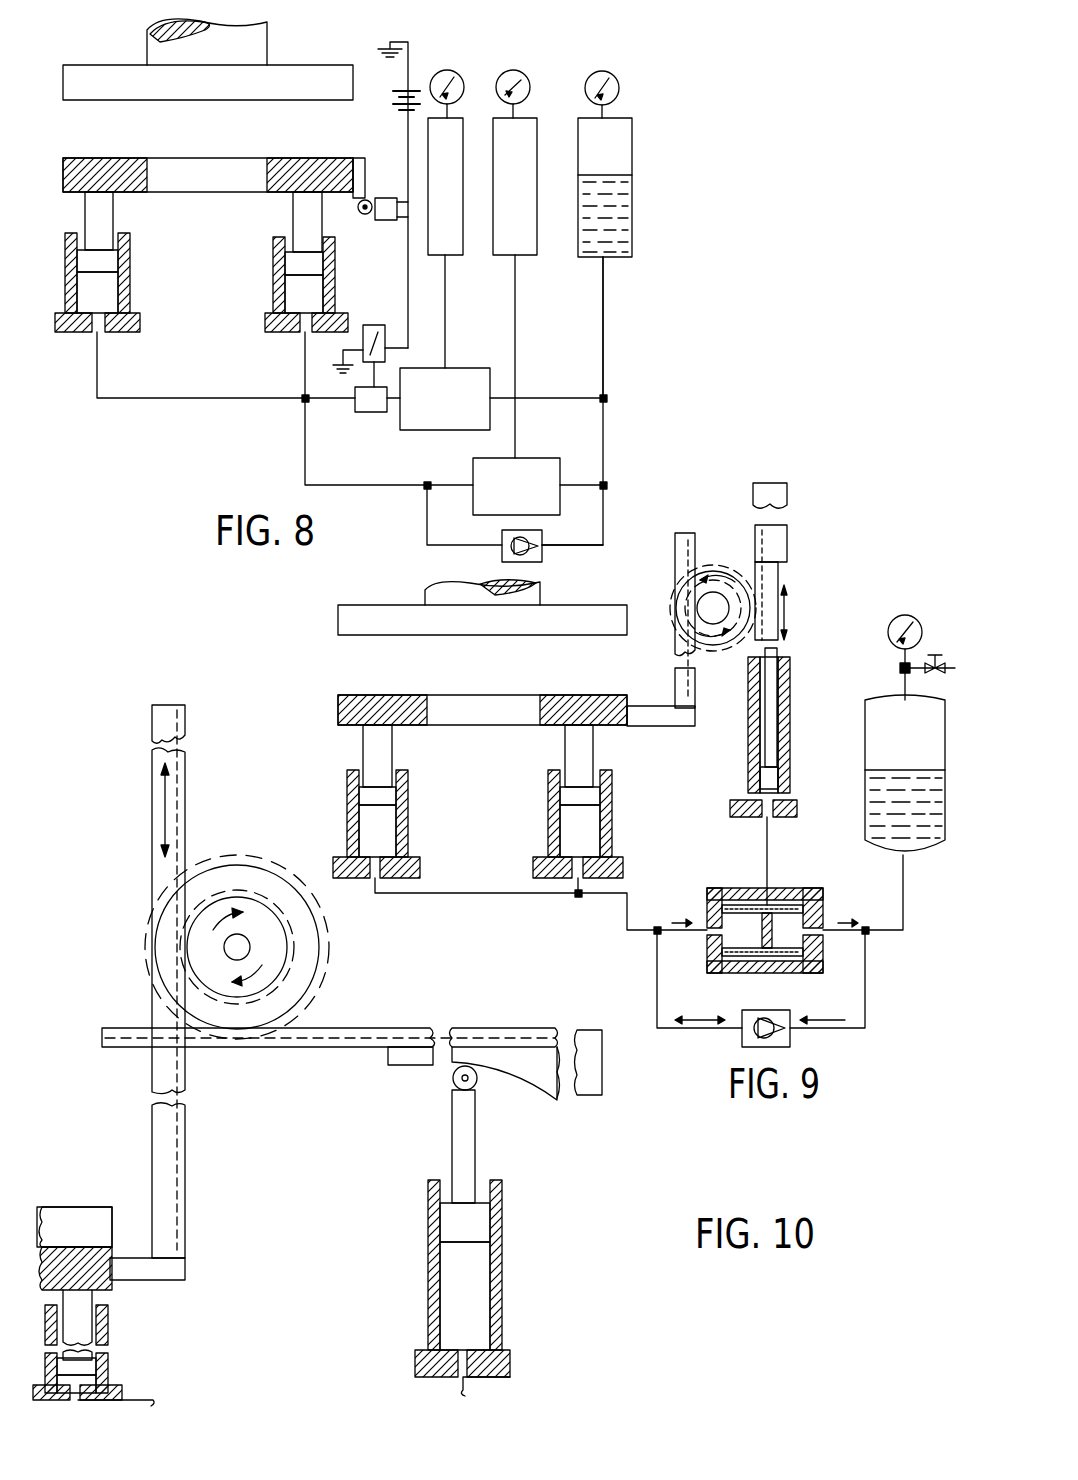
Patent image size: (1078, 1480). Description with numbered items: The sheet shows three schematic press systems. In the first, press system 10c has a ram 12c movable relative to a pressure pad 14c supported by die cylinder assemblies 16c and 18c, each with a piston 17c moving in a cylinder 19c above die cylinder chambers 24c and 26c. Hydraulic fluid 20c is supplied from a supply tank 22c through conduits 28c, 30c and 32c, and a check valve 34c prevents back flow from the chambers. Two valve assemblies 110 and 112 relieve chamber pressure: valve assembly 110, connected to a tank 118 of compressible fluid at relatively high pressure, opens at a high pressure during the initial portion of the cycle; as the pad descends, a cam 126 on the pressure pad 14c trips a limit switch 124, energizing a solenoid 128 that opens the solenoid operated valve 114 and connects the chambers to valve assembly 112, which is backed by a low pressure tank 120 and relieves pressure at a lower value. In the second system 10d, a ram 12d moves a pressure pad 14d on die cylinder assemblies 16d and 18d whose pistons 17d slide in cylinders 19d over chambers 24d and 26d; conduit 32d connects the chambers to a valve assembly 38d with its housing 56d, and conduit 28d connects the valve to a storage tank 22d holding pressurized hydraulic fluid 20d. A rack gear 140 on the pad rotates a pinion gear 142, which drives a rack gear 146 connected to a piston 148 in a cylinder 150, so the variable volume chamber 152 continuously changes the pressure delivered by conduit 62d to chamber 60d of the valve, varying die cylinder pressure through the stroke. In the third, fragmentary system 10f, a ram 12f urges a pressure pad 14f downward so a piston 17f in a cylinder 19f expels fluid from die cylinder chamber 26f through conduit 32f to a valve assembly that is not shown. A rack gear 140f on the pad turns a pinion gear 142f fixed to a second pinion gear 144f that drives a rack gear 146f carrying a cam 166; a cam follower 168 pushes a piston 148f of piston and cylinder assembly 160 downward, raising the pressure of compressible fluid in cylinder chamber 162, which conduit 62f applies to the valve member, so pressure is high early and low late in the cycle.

In FIG. 8, the press system 10c is at (655, 106).
In FIG. 8, the ram 12c is at (149, 40).
In FIG. 8, the pressure pad 14c is at (137, 158).
In FIG. 8, the die cylinder assembly 16c is at (131, 240).
In FIG. 8, the piston 17c is at (110, 258).
In FIG. 8, the die cylinder assembly 18c is at (272, 248).
In FIG. 8, the cylinder 19c is at (125, 285).
In FIG. 8, the die cylinder chamber 24c is at (110, 302).
In FIG. 8, the die cylinder chamber 26c is at (305, 300).
In FIG. 8, the cam 126 is at (354, 162).
In FIG. 8, the limit switch 124 is at (385, 220).
In FIG. 8, the solenoid 128 is at (372, 325).
In FIG. 8, the solenoid operated valve 114 is at (372, 412).
In FIG. 8, the second valve assembly 112 is at (454, 410).
In FIG. 8, the valve assembly 110 is at (529, 500).
In FIG. 8, the tank 120 is at (455, 258).
In FIG. 8, the tank 118 is at (525, 258).
In FIG. 8, the supply tank 22c is at (632, 152).
In FIG. 8, the hydraulic fluid 20c is at (620, 239).
In FIG. 8, the conduit 28c is at (605, 325).
In FIG. 8, the conduit 30c is at (587, 540).
In FIG. 8, the conduit 32c is at (305, 430).
In FIG. 8, the check valve 34c is at (502, 538).
In FIG. 9, the press system 10d is at (838, 541).
In FIG. 9, the ram 12d is at (482, 592).
In FIG. 9, the pressure pad 14d is at (556, 694).
In FIG. 9, the die cylinder assembly 16d is at (413, 778).
In FIG. 9, the piston 17d is at (390, 797).
In FIG. 9, the die cylinder assembly 18d is at (541, 782).
In FIG. 9, the cylinder 19d is at (405, 820).
In FIG. 9, the die cylinder chamber 24d is at (383, 840).
In FIG. 9, the die cylinder chamber 26d is at (567, 828).
In FIG. 9, the conduit 32d is at (640, 907).
In FIG. 9, the conduit 28d is at (903, 930).
In FIG. 9, the pump 56d is at (720, 973).
In FIG. 9, the valve assembly 38d is at (850, 860).
In FIG. 9, the chamber 60d is at (752, 900).
In FIG. 9, the conduit 62d is at (771, 840).
In FIG. 9, the variable volume chamber 152 is at (762, 820).
In FIG. 9, the cylinder 150 is at (797, 650).
In FIG. 9, the piston 148 is at (758, 780).
In FIG. 9, the rack gear 146 is at (780, 498).
In FIG. 9, the rack gear 140 is at (690, 660).
In FIG. 9, the pinion gear 142 is at (705, 607).
In FIG. 9, the storage tank 22d is at (880, 712).
In FIG. 9, the pressurized hydraulic fluid 20d is at (875, 772).
In FIG. 10, the press system 10f is at (80, 810).
In FIG. 10, the rack gear 140f is at (185, 745).
In FIG. 10, the pinion gear 142f is at (240, 980).
In FIG. 10, the second pinion gear 144f is at (236, 865).
In FIG. 10, the rack gear 146f is at (440, 1025).
In FIG. 10, the cam 166 is at (585, 1095).
In FIG. 10, the cam follower 168 is at (452, 1082).
In FIG. 10, the piston and cylinder assembly 160 is at (420, 1230).
In FIG. 10, the piston 148f is at (480, 1215).
In FIG. 10, the cylinder chamber 162 is at (465, 1270).
In FIG. 10, the conduit 62f is at (510, 1377).
In FIG. 10, the ram 12f is at (98, 1207).
In FIG. 10, the pressure pad 14f is at (95, 1250).
In FIG. 10, the piston 17f is at (105, 1320).
In FIG. 10, the cylinder 19f is at (108, 1350).
In FIG. 10, the die cylinder chamber 26f is at (100, 1362).
In FIG. 10, the conduit 32f is at (153, 1400).